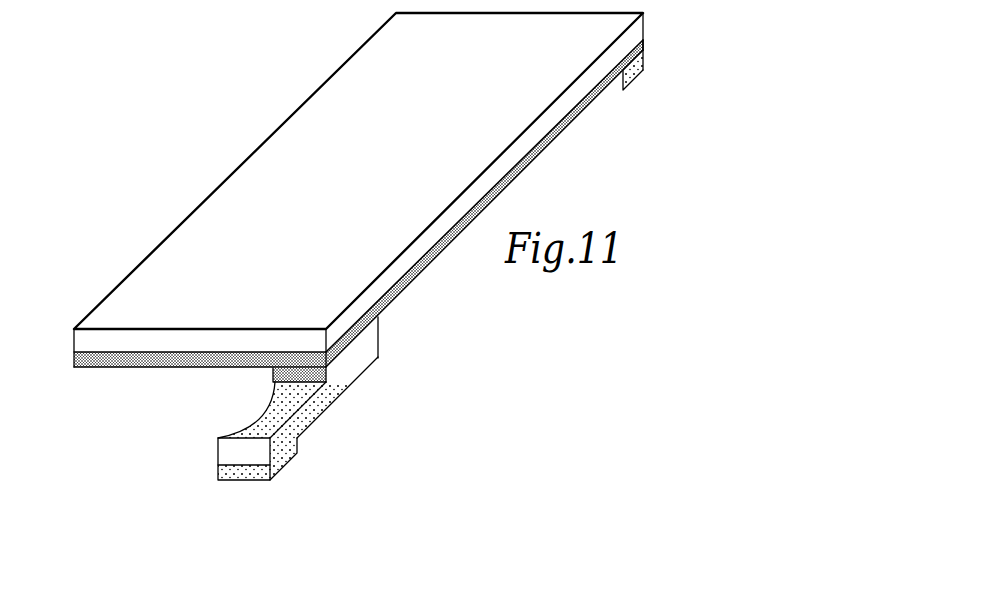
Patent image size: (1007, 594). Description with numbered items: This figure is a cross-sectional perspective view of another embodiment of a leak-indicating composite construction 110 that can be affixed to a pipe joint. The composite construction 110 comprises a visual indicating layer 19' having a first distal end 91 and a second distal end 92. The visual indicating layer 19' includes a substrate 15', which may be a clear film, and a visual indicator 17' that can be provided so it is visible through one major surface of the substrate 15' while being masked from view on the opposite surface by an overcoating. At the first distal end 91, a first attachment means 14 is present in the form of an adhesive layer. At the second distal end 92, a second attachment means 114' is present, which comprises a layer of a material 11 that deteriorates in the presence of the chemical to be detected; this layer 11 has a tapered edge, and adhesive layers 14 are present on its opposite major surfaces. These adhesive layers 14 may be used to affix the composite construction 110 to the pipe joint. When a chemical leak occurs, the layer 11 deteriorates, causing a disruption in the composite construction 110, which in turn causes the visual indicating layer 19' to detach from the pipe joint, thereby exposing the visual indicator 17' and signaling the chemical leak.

The composite construction 110 is at (180, 165).
The substrate 15' is at (358, 171).
The visual indicating layer 19' is at (388, 192).
The first distal end 91 is at (643, 45).
The second distal end 92 is at (74, 360).
The visual indicator 17' is at (485, 203).
The adhesive layer 14 is at (643, 70).
The layer of material that deteriorates 11 is at (367, 353).
The flange height 114' is at (201, 424).